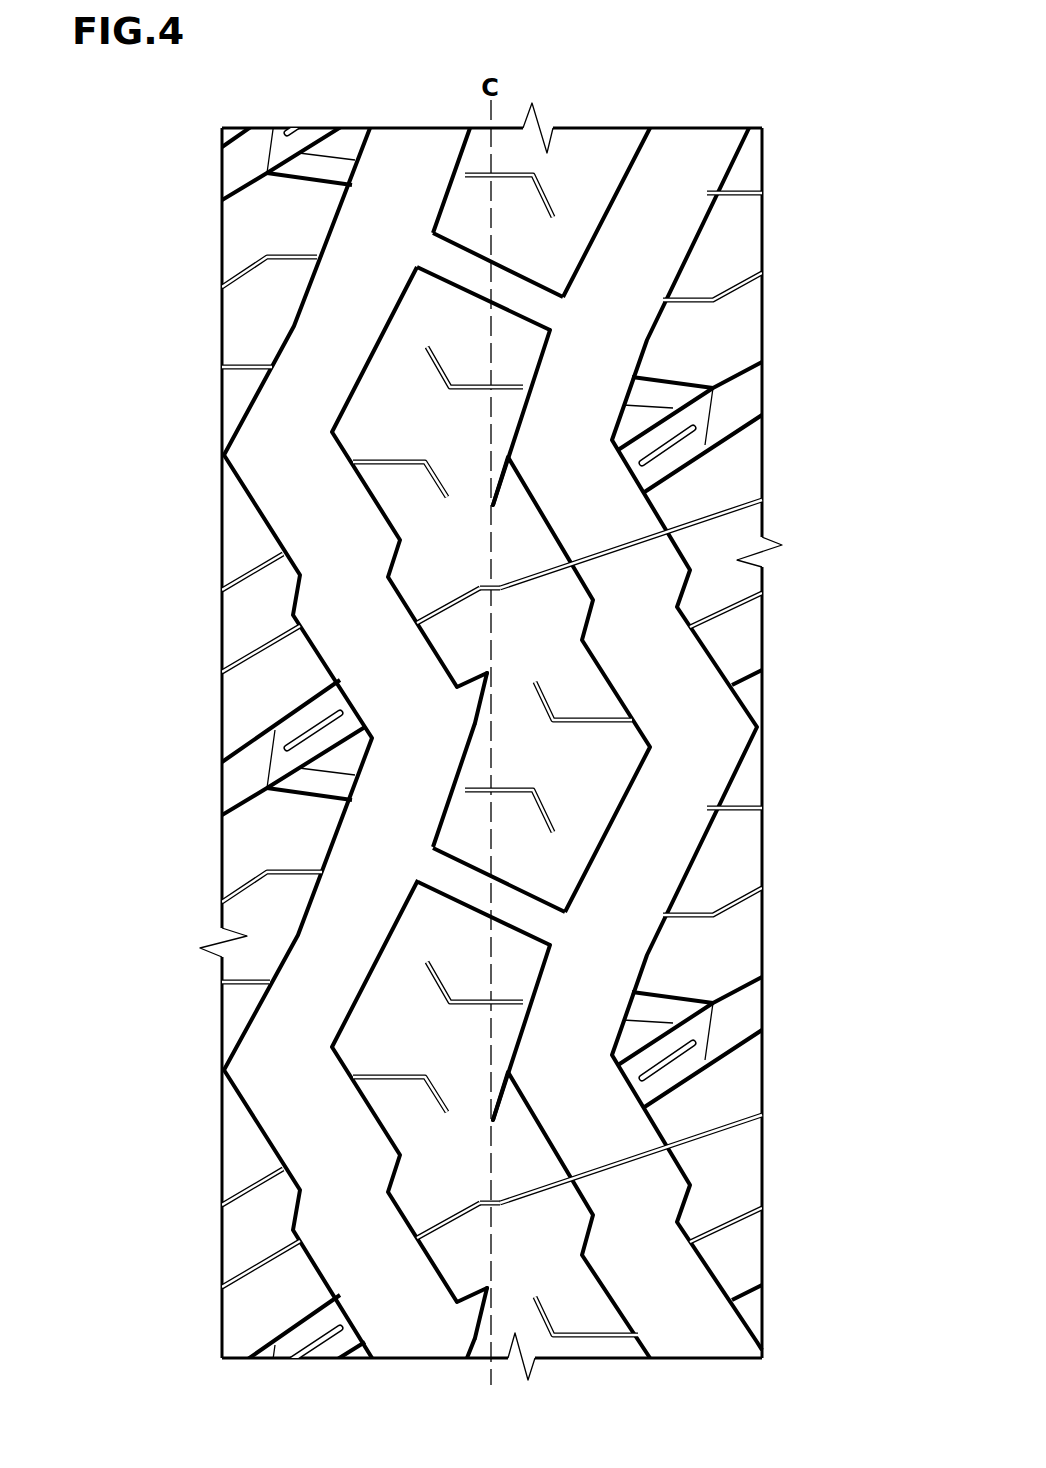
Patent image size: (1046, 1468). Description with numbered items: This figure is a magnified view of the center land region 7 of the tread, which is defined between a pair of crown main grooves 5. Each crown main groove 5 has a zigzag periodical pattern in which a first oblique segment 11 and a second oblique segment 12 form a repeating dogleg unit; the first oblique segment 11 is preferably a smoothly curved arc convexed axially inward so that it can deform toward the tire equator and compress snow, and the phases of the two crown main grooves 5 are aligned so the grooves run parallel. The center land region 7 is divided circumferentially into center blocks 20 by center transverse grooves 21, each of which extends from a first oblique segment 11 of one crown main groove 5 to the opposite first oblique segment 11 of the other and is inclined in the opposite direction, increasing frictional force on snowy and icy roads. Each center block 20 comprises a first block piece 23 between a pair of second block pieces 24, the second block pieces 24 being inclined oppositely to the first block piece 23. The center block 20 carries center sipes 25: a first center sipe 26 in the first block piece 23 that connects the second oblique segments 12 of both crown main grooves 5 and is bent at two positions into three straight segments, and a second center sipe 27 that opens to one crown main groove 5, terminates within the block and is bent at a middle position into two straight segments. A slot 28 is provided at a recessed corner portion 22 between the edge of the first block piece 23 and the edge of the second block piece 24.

The crown main groove 5 is at (402, 183).
The center land region 7 is at (573, 182).
The first oblique segment 11 is at (683, 203).
The second oblique segment 12 is at (634, 560).
The center block 20 is at (512, 545).
The center transverse groove 21 is at (527, 303).
The recessed corner portion 22 is at (517, 440).
The first block piece 23 is at (472, 578).
The second block piece 24 is at (420, 395).
The center sipe 25 is at (868, 583).
The first center sipe 26 is at (518, 594).
The second center sipe 27 is at (508, 387).
The slot 28 is at (506, 480).